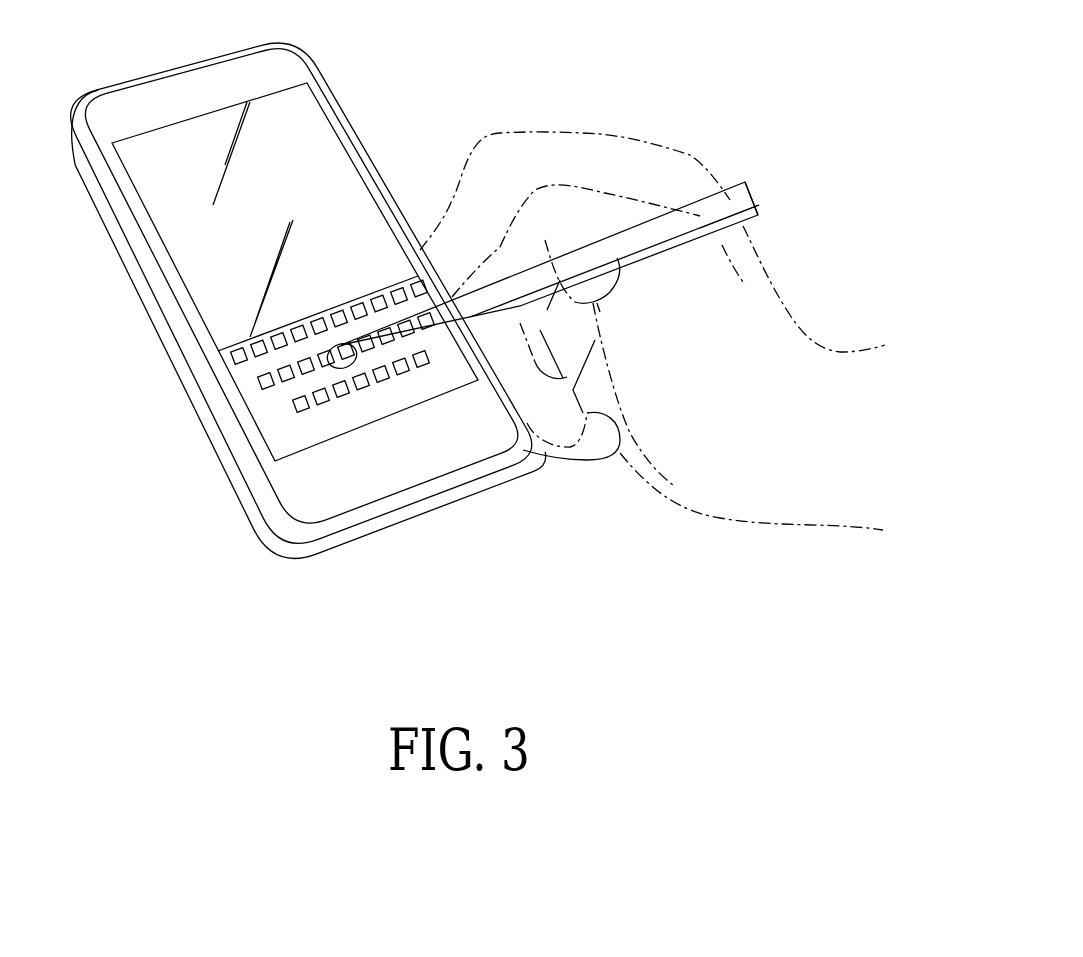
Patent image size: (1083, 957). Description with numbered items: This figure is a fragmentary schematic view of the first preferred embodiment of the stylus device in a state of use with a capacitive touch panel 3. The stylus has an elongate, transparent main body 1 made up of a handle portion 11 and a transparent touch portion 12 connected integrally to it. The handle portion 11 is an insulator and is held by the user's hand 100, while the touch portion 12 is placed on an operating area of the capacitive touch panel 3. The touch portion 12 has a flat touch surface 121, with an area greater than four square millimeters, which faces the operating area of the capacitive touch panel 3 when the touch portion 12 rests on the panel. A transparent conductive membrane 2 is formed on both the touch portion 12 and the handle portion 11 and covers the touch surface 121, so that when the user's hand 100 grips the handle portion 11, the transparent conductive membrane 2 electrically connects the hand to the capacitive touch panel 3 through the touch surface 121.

The main body 1 is at (550, 213).
The handle portion 11 is at (741, 198).
The touch portion 12 is at (326, 281).
The touch surface 121 is at (329, 342).
The transparent conductive membrane 2 is at (366, 360).
The capacitive touch panel 3 is at (160, 155).
The user's hand 100 is at (570, 133).